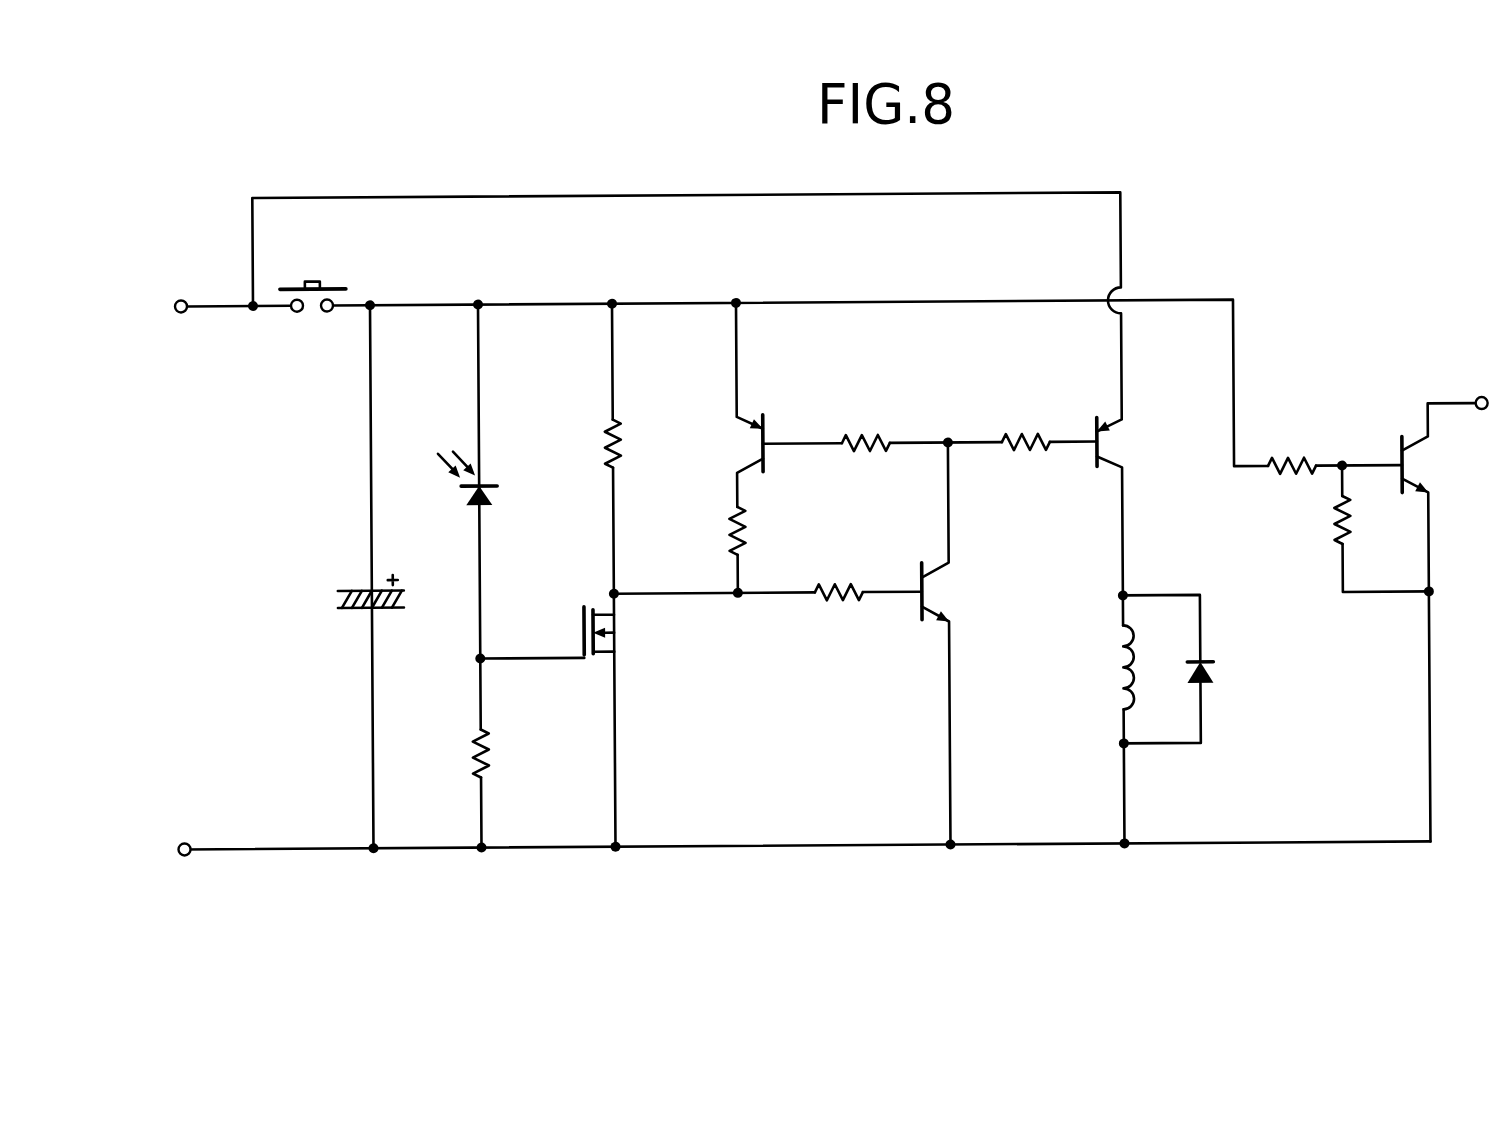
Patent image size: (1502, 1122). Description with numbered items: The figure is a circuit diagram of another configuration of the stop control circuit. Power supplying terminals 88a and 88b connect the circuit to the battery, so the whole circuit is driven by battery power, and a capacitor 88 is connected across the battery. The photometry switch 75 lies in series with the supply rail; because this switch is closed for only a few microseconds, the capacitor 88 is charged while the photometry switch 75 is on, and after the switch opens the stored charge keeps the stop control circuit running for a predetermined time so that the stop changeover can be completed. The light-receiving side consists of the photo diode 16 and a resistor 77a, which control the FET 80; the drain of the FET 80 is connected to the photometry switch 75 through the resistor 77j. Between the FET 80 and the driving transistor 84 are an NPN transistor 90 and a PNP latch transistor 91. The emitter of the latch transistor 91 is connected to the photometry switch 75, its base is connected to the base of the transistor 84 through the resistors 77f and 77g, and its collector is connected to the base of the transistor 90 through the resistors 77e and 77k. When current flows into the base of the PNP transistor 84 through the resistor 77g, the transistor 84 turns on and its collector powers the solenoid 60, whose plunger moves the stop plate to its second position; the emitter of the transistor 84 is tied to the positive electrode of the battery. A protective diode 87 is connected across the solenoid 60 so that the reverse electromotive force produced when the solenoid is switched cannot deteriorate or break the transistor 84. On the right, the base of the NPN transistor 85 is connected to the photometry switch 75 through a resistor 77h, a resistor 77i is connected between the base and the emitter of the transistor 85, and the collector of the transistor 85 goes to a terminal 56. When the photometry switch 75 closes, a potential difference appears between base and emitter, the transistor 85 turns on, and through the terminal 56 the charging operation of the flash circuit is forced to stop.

The power supplying terminal 88a is at (181, 299).
The power supplying terminal 88b is at (181, 842).
The capacitor 88 is at (353, 612).
The photometry switch 75 is at (343, 289).
The photo diode 16 is at (492, 487).
The resistor 77a is at (476, 749).
The FET 80 is at (580, 627).
The resistor 77j is at (620, 424).
The latch transistor 91 is at (764, 432).
The resistor 77k is at (735, 536).
The resistor 77f is at (890, 443).
The resistor 77e is at (813, 608).
The transistor 90 is at (922, 620).
The resistor 77g is at (1004, 447).
The transistor 84 is at (1096, 475).
The solenoid 60 is at (1122, 678).
The protective diode 87 is at (1205, 667).
The resistor 77h is at (1269, 469).
The resistor 77i is at (1336, 555).
The transistor 85 is at (1399, 447).
The terminal 56 is at (1481, 404).